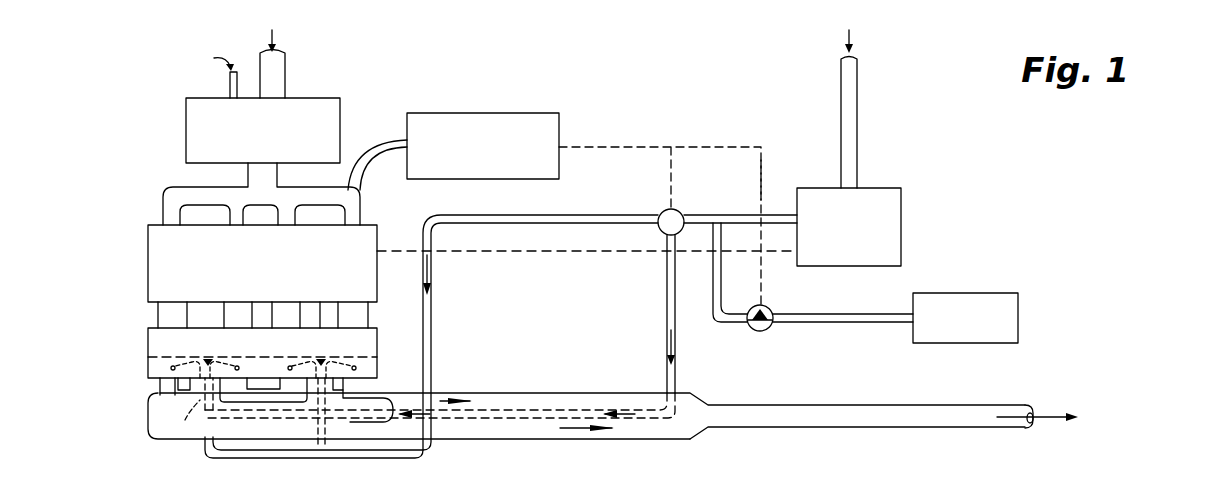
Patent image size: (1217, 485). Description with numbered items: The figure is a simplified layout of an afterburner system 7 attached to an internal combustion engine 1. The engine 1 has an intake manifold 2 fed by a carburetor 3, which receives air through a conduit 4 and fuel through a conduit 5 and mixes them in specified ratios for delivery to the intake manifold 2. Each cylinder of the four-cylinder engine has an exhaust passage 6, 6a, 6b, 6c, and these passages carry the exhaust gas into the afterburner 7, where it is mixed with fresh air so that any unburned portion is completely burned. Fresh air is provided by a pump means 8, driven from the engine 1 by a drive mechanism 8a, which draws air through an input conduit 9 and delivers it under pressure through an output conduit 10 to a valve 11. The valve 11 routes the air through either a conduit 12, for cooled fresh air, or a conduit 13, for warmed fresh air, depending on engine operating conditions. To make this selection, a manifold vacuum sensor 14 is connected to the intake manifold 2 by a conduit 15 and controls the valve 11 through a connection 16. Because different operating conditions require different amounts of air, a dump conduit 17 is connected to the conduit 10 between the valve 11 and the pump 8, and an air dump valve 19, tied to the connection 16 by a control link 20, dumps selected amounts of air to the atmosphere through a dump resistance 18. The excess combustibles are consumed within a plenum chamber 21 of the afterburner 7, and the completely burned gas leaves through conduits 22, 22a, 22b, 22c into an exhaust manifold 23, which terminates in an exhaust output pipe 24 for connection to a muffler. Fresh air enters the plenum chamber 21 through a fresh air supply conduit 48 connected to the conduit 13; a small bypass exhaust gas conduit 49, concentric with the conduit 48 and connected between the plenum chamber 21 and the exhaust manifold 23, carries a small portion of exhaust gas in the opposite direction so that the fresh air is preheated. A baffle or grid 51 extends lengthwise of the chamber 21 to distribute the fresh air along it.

The internal combustion engine 1 is at (148, 245).
The intake manifold 2 is at (163, 200).
The carburetor 3 is at (186, 115).
The air conduit 4 is at (285, 85).
The fuel conduit 5 is at (229, 85).
The exhaust passage 6 is at (158, 314).
The exhaust passage 6a is at (218, 312).
The exhaust passage 6b is at (268, 312).
The exhaust passage 6c is at (332, 312).
The afterburner system 7 is at (122, 472).
The pump means 8 is at (901, 198).
The drive mechanism 8a is at (518, 251).
The input conduit 9 is at (857, 95).
The output conduit 10 is at (731, 272).
The valve 11 is at (661, 212).
The conduit 12 is at (576, 215).
The conduit 13 is at (667, 305).
The manifold vacuum sensor 14 is at (505, 113).
The conduit 15 is at (396, 140).
The connection 16 is at (598, 147).
The dump conduit 17 is at (848, 314).
The dump resistance 18 is at (969, 293).
The air dump valve 19 is at (769, 310).
The control link 20 is at (761, 180).
The plenum chamber 21 is at (148, 333).
The conduit 22 is at (160, 385).
The conduit 22a is at (258, 380).
The conduit 22b is at (286, 380).
The conduit 22c is at (372, 390).
The exhaust manifold 23 is at (148, 405).
The exhaust output pipe 24 is at (826, 405).
The fresh air supply conduit 48 is at (185, 420).
The bypass exhaust gas conduit 49 is at (195, 402).
The baffle or grid 51 is at (148, 357).